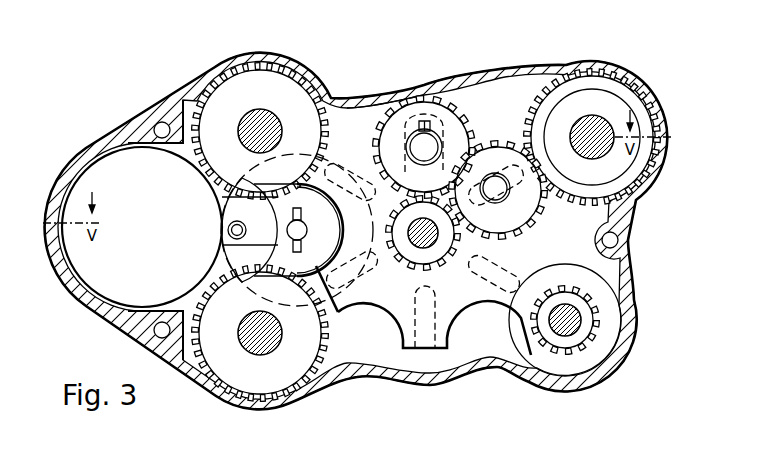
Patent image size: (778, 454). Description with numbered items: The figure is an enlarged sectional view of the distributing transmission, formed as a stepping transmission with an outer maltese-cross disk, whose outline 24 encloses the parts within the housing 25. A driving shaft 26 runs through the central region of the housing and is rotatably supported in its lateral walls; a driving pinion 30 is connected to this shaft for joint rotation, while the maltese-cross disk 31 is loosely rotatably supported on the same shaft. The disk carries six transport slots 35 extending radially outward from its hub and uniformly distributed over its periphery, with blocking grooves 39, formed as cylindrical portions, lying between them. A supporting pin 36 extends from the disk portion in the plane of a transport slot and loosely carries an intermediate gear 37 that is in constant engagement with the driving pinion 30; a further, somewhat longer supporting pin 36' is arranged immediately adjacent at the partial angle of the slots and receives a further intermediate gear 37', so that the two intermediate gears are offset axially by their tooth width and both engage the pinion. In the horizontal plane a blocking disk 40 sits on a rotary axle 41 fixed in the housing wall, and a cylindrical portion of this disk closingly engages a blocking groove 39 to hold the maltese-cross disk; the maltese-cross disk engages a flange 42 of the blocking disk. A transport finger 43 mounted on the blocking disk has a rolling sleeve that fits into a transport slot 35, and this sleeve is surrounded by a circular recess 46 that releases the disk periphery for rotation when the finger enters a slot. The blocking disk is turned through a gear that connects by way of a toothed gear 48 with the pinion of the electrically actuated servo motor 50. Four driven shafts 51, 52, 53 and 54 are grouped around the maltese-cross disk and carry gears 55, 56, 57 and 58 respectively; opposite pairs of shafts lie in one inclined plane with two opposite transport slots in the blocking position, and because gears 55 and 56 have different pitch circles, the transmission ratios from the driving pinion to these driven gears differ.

The gear housing 24 is at (479, 75).
The housing 25 is at (394, 90).
The driving shaft 26 is at (418, 242).
The driving pinion 30 is at (448, 263).
The maltese-cross disk 31 is at (407, 356).
The transport slots 35 is at (345, 155).
The supporting pin 36 is at (492, 154).
The further supporting pin 36' is at (429, 95).
The intermediate gear 37 is at (498, 171).
The further intermediate gear 37' is at (431, 111).
The blocking grooves 39 is at (360, 162).
The blocking disk 40 is at (222, 197).
The rotary axle 41 is at (299, 220).
The flange 42 is at (322, 292).
The transport finger 43 is at (229, 229).
The circular recess 46 is at (222, 245).
The toothed gear 48 is at (168, 132).
The servo motor 50 is at (110, 157).
The driven shaft 51 is at (599, 115).
The driven shaft 52 is at (570, 330).
The driven shaft 53 is at (258, 345).
The driven shaft 54 is at (258, 122).
The gear 55 is at (580, 90).
The gear 56 is at (562, 343).
The gear 57 is at (282, 373).
The gear 58 is at (288, 85).